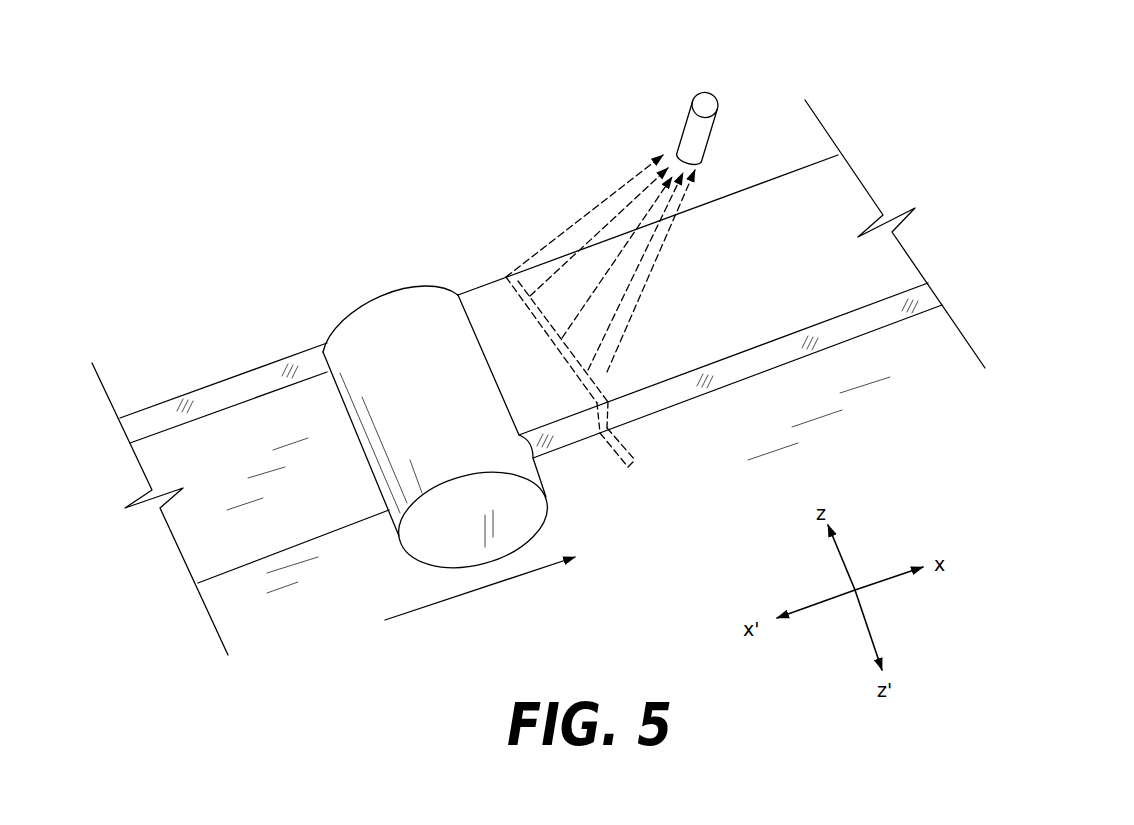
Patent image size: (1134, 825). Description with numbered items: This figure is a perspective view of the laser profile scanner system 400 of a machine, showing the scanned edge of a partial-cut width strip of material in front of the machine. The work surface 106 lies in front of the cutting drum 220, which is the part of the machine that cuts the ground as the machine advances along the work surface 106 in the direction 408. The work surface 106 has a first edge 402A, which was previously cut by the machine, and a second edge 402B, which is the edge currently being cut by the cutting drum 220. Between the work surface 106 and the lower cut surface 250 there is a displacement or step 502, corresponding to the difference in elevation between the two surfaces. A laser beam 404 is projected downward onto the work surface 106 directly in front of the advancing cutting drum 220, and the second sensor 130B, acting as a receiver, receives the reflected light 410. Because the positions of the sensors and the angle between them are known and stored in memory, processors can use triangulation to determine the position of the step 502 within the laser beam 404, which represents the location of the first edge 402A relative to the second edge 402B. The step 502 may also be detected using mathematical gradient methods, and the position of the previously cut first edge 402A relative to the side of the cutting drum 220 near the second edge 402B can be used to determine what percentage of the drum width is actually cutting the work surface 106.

The laser profile scanner system 400 is at (252, 182).
The work surface 106 is at (900, 250).
The second sensor 130B is at (705, 102).
The cutting drum 220 is at (397, 315).
The cut surface 250 is at (195, 522).
The first edge 402A is at (870, 320).
The second edge 402B is at (170, 415).
The laser beam 404 is at (507, 288).
The direction 408 is at (478, 590).
The reflected light 410 is at (583, 217).
The step 502 is at (605, 418).